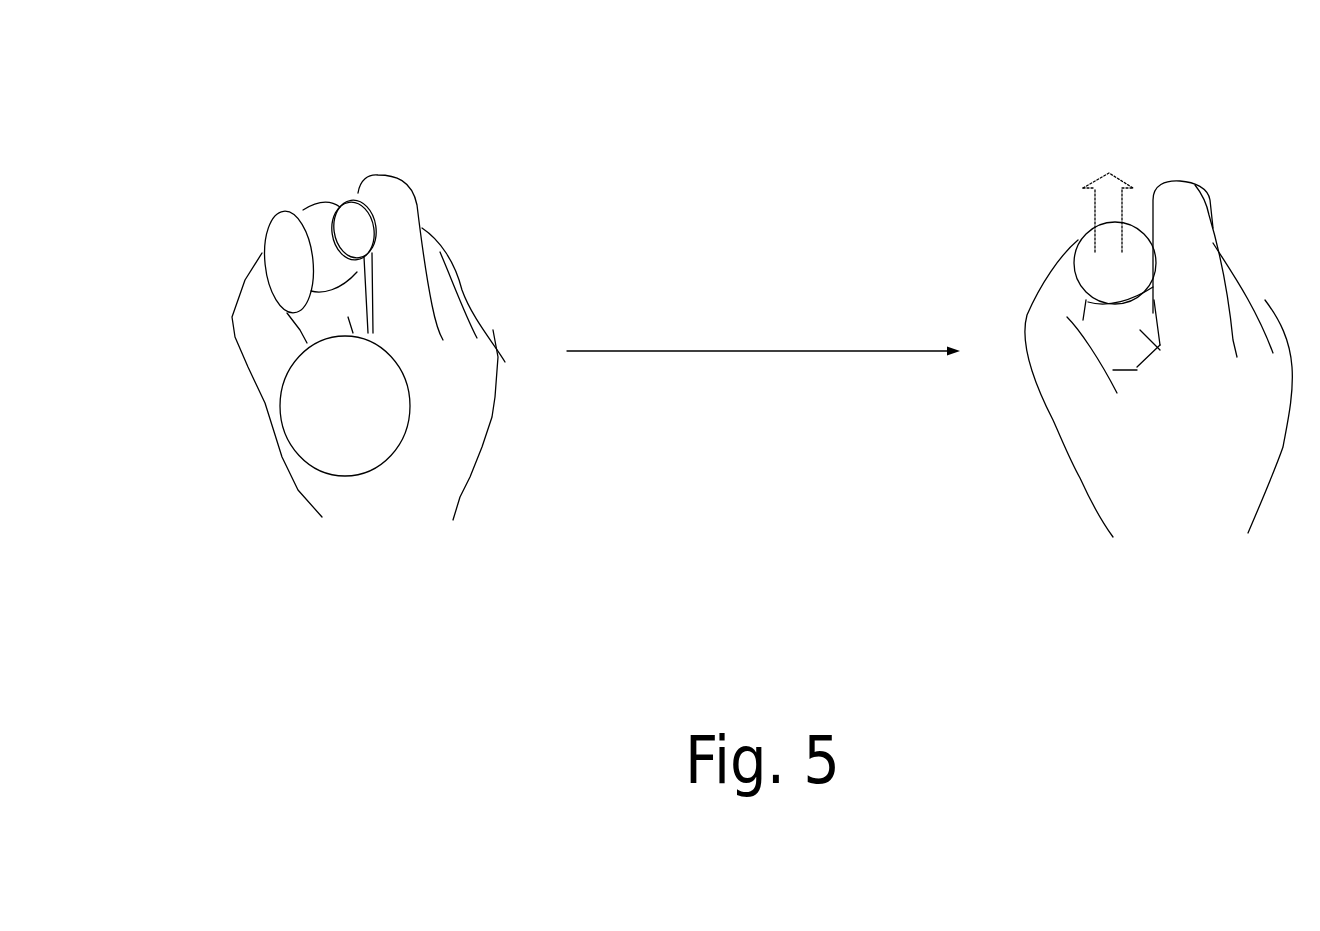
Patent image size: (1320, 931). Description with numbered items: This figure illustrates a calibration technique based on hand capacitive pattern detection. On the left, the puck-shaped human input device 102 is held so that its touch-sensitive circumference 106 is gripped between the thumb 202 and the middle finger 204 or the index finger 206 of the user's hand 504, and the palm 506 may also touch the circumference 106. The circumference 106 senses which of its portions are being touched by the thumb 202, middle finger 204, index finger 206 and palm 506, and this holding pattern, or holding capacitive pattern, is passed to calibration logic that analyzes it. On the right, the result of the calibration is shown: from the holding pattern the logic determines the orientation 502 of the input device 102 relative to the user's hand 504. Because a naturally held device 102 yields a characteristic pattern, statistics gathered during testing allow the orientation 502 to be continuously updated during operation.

The human input device 102 is at (656, 223).
The circumference 106 is at (310, 207).
The thumb 202 is at (263, 325).
The middle finger 204 is at (432, 258).
The index finger 206 is at (382, 195).
The orientation 502 is at (1105, 180).
The user's hand 504 is at (355, 530).
The palm 506 is at (333, 402).